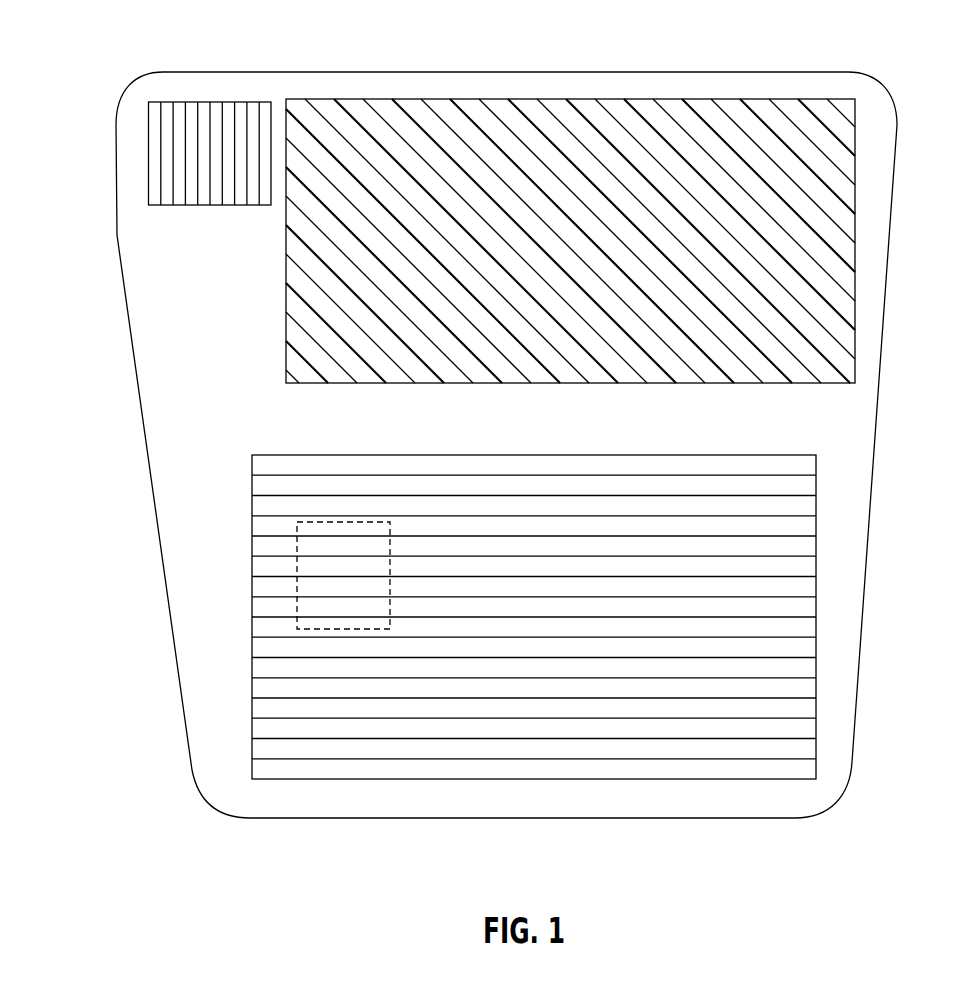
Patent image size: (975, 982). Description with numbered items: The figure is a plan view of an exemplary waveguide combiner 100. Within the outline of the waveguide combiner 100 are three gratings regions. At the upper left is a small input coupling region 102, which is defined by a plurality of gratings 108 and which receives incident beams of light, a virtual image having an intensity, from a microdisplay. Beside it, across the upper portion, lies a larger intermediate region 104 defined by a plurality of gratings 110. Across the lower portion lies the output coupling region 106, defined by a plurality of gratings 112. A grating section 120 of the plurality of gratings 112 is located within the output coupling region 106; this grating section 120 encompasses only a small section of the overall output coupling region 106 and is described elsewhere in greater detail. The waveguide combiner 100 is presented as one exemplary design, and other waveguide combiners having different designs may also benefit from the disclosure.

The waveguide combiner 100 is at (240, 325).
The input coupling region 102 is at (154, 110).
The intermediate region 104 is at (570, 194).
The output coupling region 106 is at (520, 676).
The plurality of gratings 108 is at (160, 176).
The plurality of gratings 110 is at (760, 122).
The plurality of gratings 112 is at (743, 760).
The grating section 120 is at (290, 605).